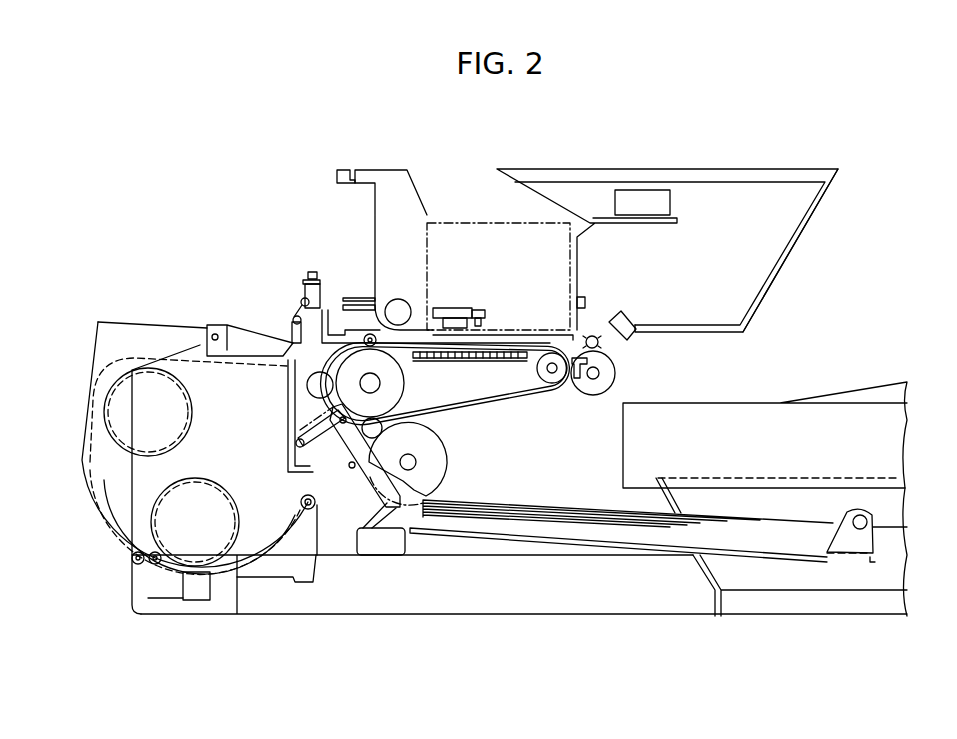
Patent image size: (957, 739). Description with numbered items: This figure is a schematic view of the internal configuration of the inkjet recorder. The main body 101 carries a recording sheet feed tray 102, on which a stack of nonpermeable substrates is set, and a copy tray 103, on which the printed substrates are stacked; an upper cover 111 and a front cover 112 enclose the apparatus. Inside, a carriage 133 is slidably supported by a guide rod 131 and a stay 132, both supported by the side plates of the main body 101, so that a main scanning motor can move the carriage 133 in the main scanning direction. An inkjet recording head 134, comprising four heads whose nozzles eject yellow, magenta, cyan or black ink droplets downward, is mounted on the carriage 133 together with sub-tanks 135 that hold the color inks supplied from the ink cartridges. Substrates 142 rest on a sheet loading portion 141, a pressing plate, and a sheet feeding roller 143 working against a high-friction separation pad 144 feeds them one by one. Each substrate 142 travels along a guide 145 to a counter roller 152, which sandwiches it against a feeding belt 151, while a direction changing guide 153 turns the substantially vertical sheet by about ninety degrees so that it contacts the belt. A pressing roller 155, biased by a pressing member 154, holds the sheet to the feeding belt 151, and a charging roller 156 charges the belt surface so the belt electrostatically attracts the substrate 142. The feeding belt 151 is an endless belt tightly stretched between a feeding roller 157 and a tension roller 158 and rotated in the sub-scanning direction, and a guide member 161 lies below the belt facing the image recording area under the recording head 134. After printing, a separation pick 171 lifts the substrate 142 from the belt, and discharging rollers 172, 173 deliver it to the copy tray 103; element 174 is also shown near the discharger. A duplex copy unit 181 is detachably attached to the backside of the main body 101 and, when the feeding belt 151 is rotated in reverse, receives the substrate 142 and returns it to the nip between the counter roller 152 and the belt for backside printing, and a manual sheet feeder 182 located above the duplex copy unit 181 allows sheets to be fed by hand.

The main body 101 is at (672, 137).
The upper cover 111 is at (749, 170).
The front cover 112 is at (796, 254).
The guide rod 131 is at (397, 299).
The stay 132 is at (342, 168).
The carriage 133 is at (412, 196).
The inkjet recording head 134 is at (510, 330).
The sub-tanks 135 is at (471, 224).
The sheet loading portion 141 is at (484, 541).
The substrates 142 is at (548, 528).
The sheet feeding roller 143 is at (447, 467).
The separation pad 144 is at (388, 556).
The guide 145 is at (342, 460).
The feeding belt 151 is at (490, 398).
The counter roller 152 is at (305, 383).
The direction changing guide 153 is at (297, 338).
The pressing member 154 is at (300, 300).
The pressing roller 155 is at (363, 338).
The charging roller 156 is at (383, 430).
The feeding roller 157 is at (404, 380).
The tension roller 158 is at (553, 386).
The guide member 161 is at (462, 362).
The separation pick 171 is at (600, 390).
The discharging roller 172 is at (612, 373).
The discharging roller 173 is at (592, 334).
The sensor 174 is at (629, 319).
The duplex copy unit 181 is at (95, 357).
The manual sheet feeder 182 is at (207, 322).
The recording sheet feed tray 102 is at (782, 604).
The copy tray 103 is at (840, 420).